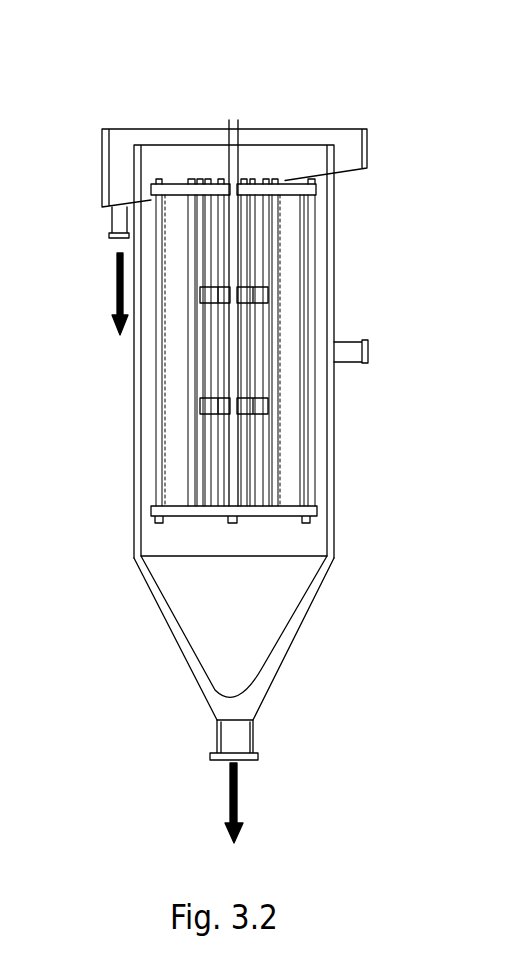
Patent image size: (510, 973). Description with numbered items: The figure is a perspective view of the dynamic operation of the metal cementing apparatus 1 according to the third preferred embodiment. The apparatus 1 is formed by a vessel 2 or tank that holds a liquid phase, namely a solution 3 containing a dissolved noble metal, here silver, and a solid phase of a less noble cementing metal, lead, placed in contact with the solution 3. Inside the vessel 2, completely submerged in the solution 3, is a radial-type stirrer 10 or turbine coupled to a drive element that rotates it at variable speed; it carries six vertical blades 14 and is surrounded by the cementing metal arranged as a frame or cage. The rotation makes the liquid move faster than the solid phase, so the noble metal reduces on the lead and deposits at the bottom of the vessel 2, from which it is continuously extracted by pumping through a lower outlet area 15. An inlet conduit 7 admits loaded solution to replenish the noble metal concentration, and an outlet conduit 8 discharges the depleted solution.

The metal cementing apparatus 1 is at (192, 120).
The vessel 2 is at (140, 468).
The solution 3 is at (315, 418).
The inlet conduit 7 is at (372, 343).
The outlet conduit 8 is at (117, 287).
The stirrer 10 is at (233, 328).
The vertical blades 14 is at (210, 407).
The lower outlet area 15 is at (245, 767).